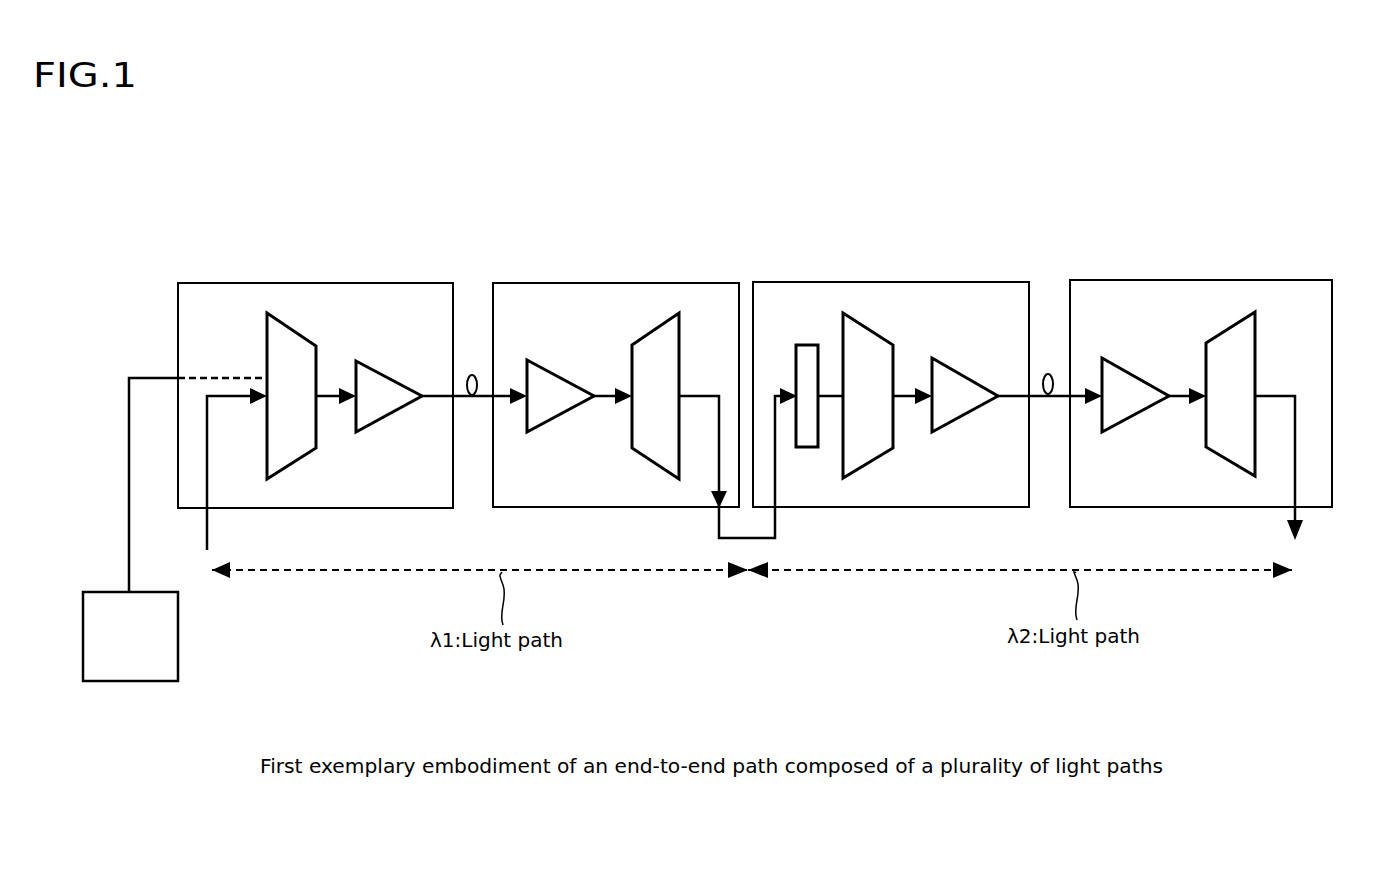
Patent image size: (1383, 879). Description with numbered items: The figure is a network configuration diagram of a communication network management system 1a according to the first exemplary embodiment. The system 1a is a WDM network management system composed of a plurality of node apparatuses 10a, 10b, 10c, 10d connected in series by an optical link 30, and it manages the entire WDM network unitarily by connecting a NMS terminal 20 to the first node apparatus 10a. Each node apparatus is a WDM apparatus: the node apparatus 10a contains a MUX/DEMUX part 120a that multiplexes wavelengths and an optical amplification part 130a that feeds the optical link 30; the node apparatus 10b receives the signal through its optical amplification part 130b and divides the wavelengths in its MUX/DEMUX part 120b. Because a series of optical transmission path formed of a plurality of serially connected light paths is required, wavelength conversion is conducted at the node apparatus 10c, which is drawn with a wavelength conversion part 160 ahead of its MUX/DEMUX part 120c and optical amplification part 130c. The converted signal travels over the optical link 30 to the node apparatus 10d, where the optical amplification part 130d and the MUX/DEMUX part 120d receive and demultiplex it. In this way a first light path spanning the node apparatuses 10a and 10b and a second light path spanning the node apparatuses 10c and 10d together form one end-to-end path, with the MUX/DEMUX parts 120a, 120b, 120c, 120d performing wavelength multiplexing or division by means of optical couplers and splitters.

The communication network management system 1a is at (1130, 113).
The node apparatus 10a is at (213, 283).
The node apparatus 10b is at (530, 283).
The node apparatus 10c is at (785, 282).
The node apparatus 10d is at (1110, 280).
The NMS terminal 20 is at (178, 628).
The optical link 30 is at (472, 375).
The MUX/DEMUX part 120a is at (305, 341).
The MUX/DEMUX part 120b is at (642, 343).
The MUX/DEMUX part 120c is at (880, 340).
The MUX/DEMUX part 120d is at (1216, 341).
The optical amplification part 130a is at (372, 425).
The optical amplification part 130b is at (545, 425).
The optical amplification part 130c is at (948, 425).
The optical amplification part 130d is at (1122, 425).
The wavelength conversion part 160 is at (808, 345).